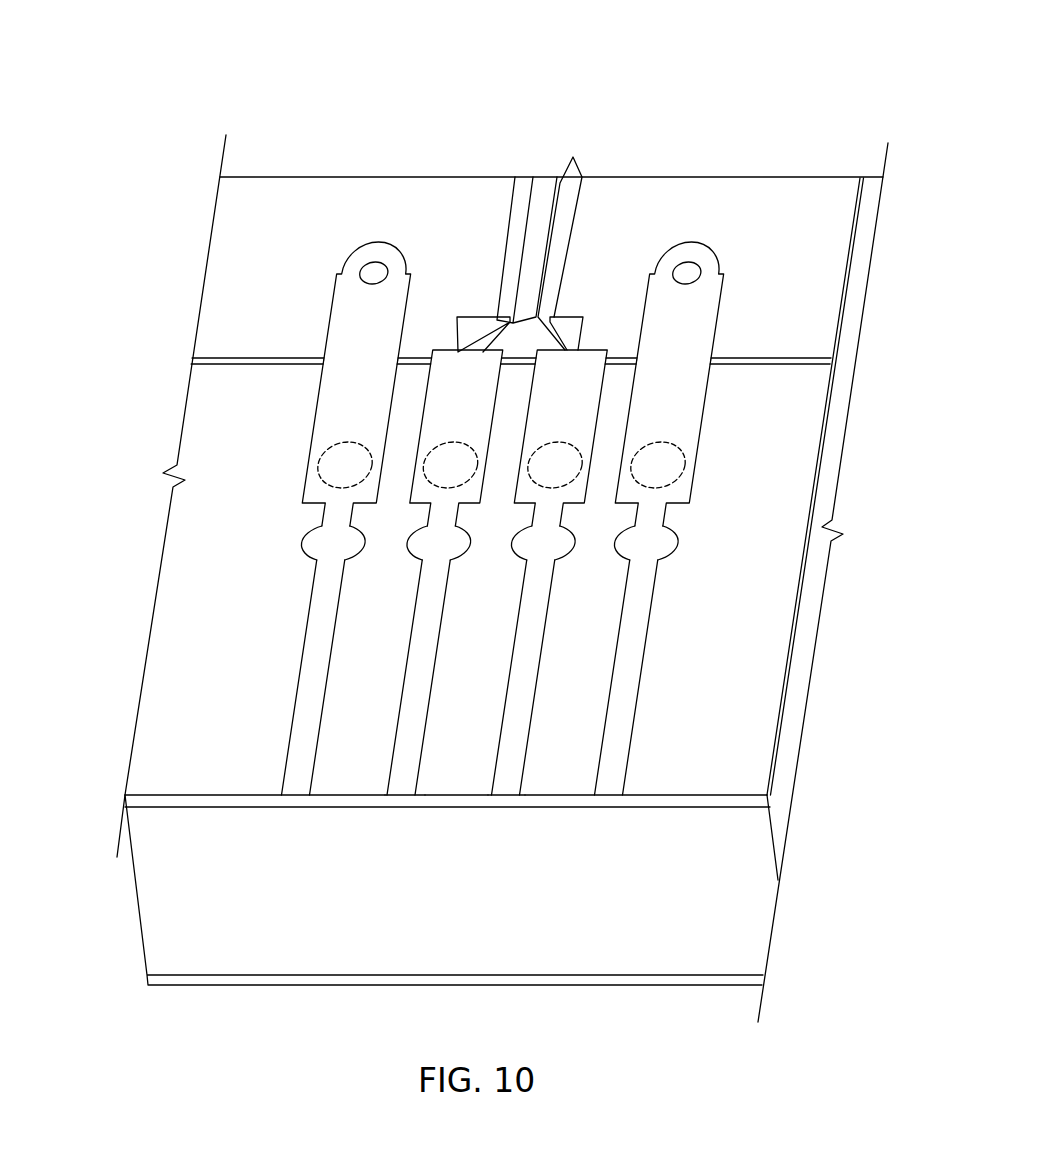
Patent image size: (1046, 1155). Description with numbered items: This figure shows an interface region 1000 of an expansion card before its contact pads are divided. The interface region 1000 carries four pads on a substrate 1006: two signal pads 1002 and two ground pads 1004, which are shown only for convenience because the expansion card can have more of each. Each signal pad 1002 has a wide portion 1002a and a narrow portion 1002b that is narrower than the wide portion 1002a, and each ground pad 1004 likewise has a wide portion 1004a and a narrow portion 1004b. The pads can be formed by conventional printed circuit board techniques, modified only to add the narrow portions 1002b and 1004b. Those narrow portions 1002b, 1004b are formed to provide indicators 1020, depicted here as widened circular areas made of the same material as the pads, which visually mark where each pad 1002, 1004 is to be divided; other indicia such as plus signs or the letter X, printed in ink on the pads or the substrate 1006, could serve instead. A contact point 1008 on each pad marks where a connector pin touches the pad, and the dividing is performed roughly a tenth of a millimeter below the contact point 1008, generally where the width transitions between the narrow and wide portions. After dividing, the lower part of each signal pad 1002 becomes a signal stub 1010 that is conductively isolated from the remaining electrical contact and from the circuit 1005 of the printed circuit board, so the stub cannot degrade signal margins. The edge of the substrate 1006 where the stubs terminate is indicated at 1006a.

The interface region 1000 is at (255, 50).
The signal pad 1002 is at (445, 335).
The wide portion 1002a is at (484, 373).
The narrow portion 1002b is at (417, 712).
The ground pad 1004 is at (280, 520).
The wide portion 1004a is at (365, 323).
The narrow portion 1004b is at (322, 625).
The circuit 1005 is at (545, 205).
The substrate 1006 is at (160, 745).
The housing base 1006a is at (760, 802).
The contact point 1008 is at (340, 443).
The signal stub 1010 is at (417, 780).
The indicator 1020 is at (442, 542).